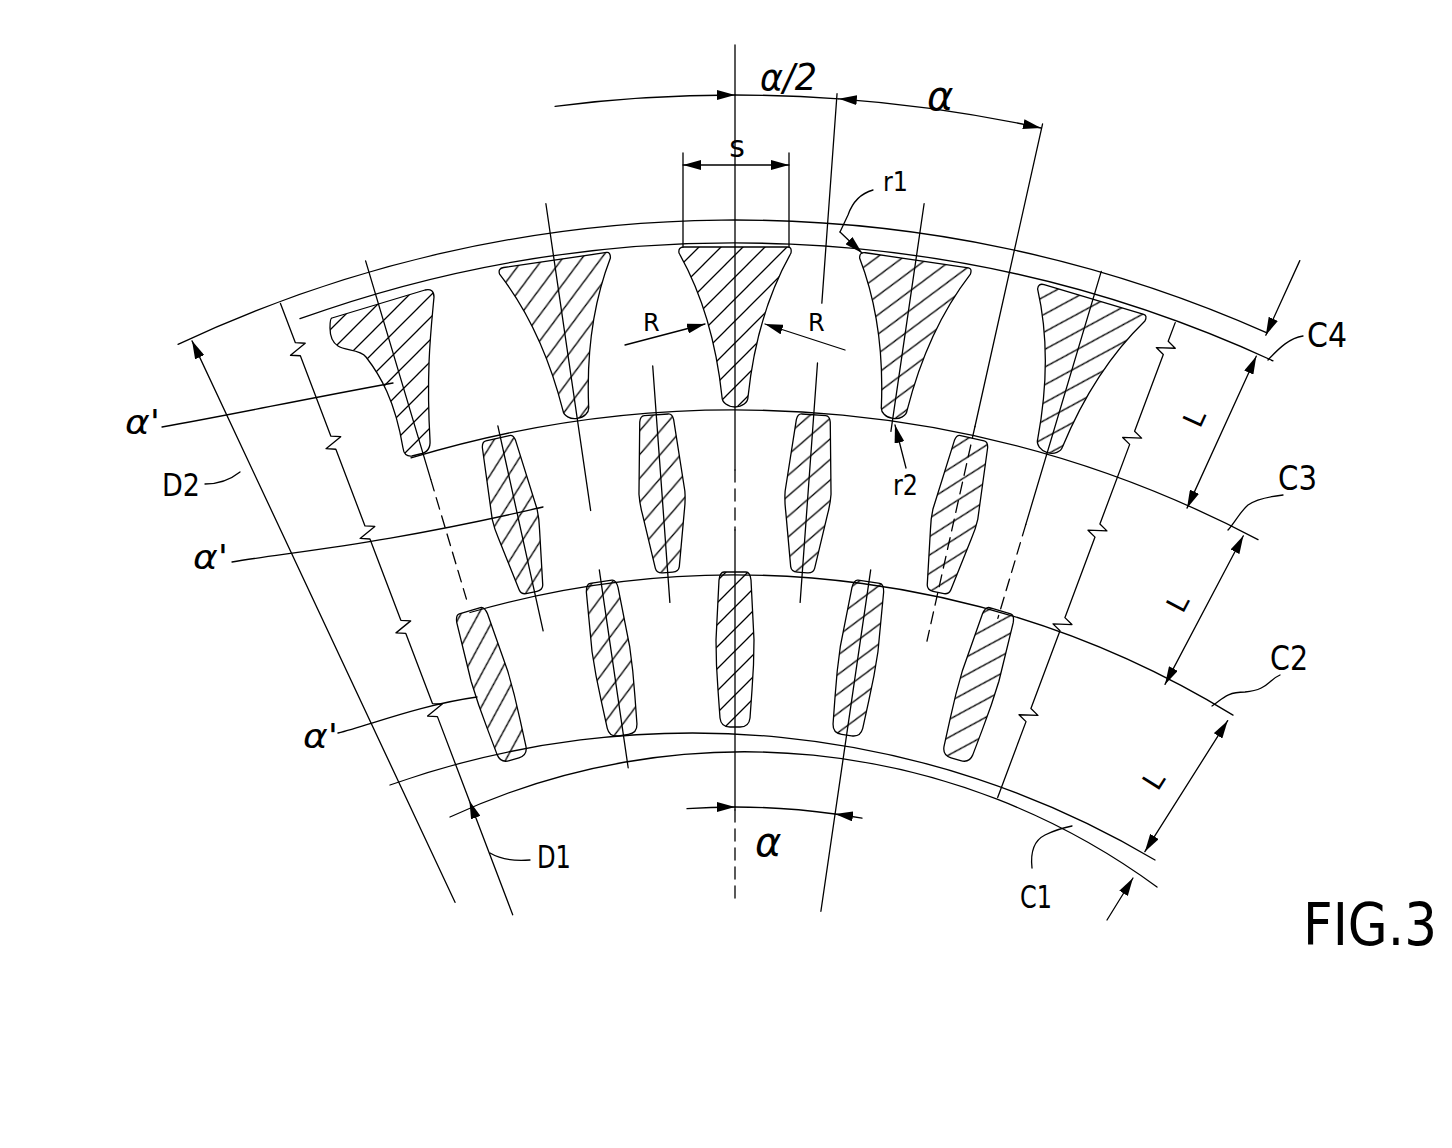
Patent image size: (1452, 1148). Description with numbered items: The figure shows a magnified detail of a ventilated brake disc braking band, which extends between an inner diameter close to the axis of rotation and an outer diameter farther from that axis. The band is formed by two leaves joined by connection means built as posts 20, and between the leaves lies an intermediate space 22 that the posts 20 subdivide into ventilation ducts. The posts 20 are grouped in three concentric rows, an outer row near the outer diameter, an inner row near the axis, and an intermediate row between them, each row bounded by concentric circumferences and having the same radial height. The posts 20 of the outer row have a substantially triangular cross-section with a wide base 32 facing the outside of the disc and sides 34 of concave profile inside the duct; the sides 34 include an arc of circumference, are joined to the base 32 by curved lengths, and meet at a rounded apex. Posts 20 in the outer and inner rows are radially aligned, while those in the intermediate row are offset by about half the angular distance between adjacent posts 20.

The posts 20 is at (1110, 317).
The intermediate space 22 is at (1013, 308).
The wide base 32 is at (392, 286).
The sides 34 is at (332, 318).